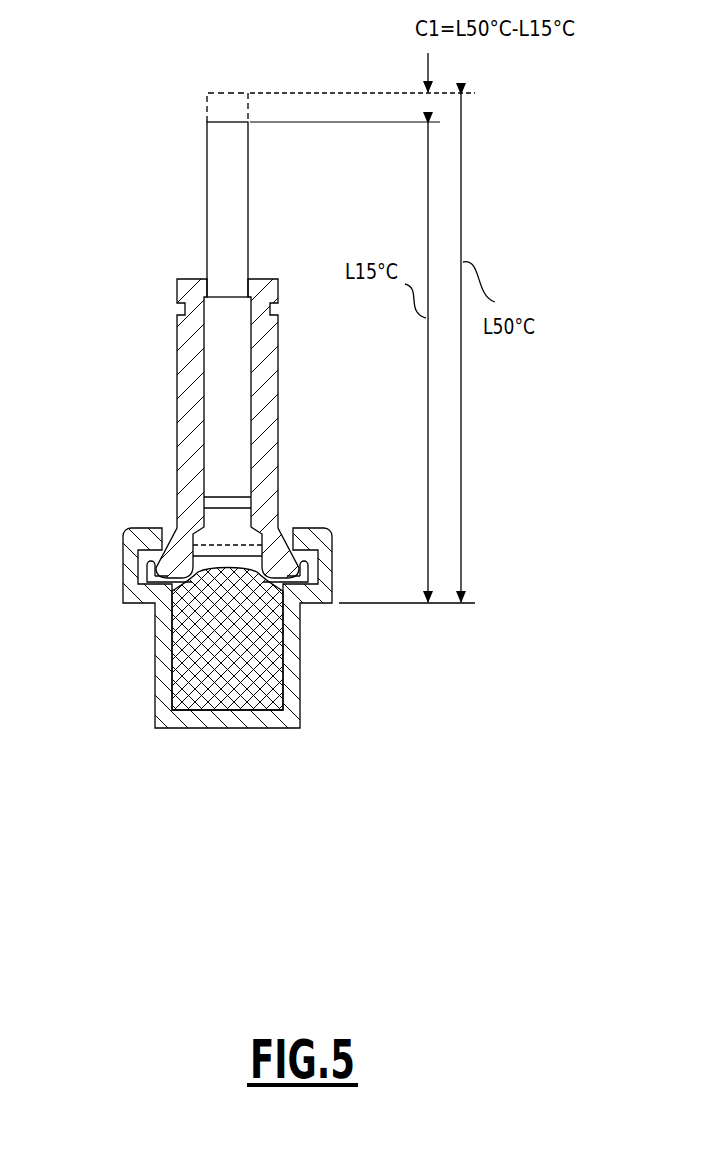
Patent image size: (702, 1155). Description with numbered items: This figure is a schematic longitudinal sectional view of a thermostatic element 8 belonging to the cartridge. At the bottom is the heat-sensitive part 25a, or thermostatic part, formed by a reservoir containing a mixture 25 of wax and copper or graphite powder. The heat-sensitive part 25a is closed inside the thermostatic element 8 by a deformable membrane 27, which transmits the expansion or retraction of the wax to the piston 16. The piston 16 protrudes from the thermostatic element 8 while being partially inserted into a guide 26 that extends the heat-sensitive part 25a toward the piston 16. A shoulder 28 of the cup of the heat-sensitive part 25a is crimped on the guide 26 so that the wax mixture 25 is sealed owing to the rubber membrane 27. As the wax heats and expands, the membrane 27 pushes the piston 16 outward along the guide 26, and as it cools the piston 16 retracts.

The thermostatic element 8 is at (124, 536).
The piston 16 is at (231, 233).
The guide 26 is at (266, 424).
The deformable membrane 27 is at (306, 579).
The shoulder 28 is at (142, 568).
The mixture of wax and copper or graphite powder 25 is at (200, 645).
The heat-sensitive part 25a is at (291, 665).